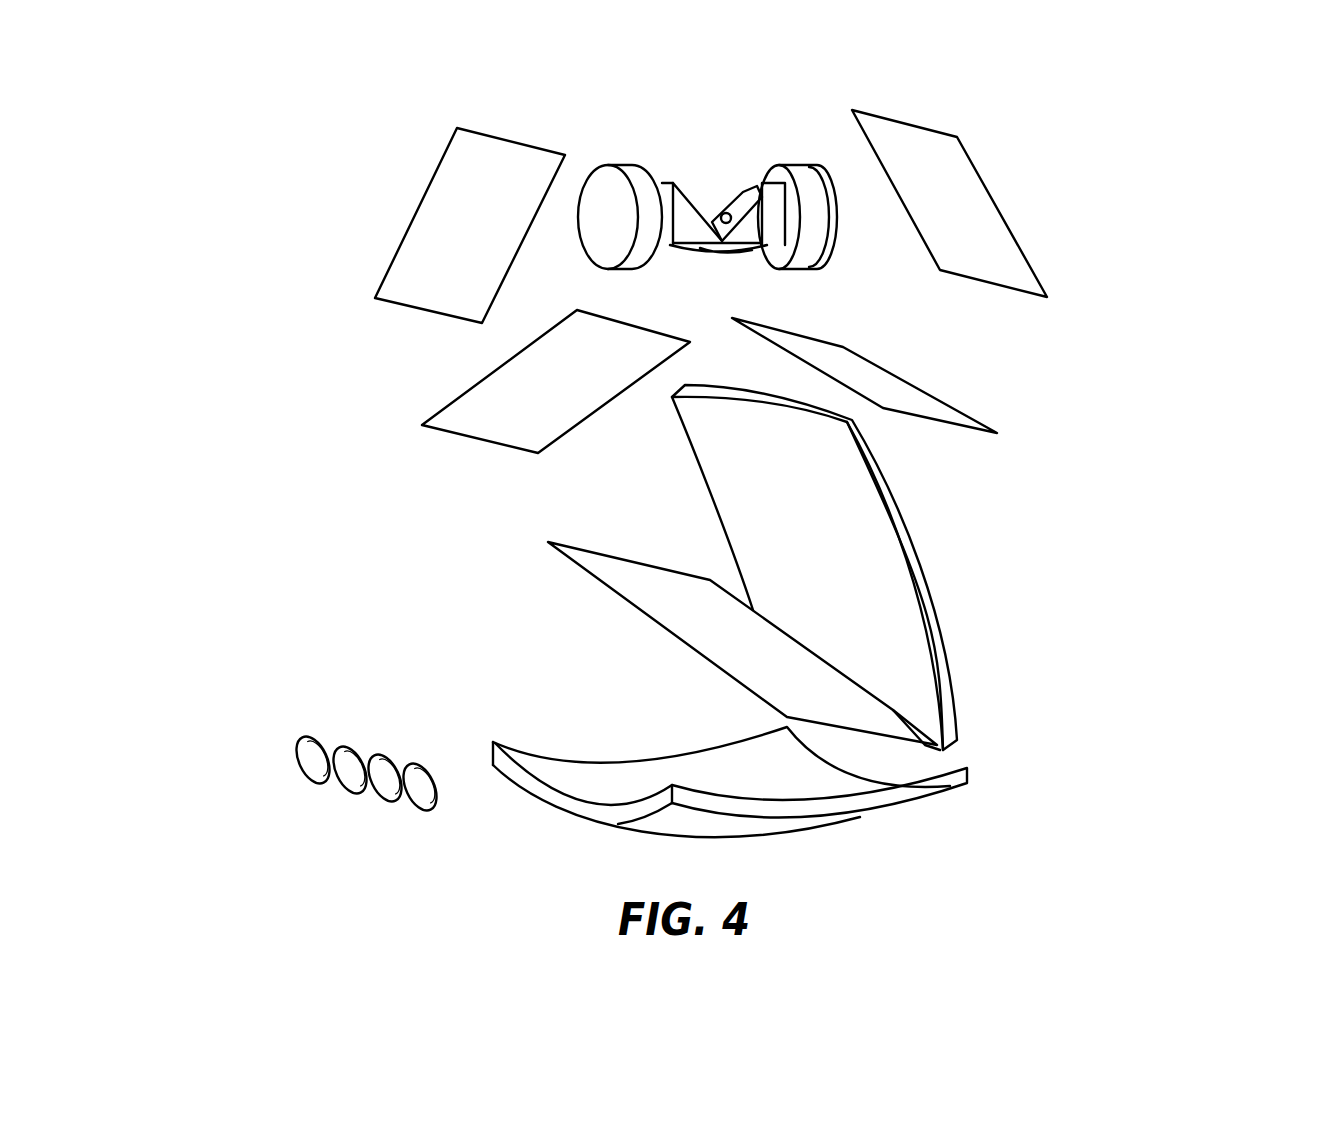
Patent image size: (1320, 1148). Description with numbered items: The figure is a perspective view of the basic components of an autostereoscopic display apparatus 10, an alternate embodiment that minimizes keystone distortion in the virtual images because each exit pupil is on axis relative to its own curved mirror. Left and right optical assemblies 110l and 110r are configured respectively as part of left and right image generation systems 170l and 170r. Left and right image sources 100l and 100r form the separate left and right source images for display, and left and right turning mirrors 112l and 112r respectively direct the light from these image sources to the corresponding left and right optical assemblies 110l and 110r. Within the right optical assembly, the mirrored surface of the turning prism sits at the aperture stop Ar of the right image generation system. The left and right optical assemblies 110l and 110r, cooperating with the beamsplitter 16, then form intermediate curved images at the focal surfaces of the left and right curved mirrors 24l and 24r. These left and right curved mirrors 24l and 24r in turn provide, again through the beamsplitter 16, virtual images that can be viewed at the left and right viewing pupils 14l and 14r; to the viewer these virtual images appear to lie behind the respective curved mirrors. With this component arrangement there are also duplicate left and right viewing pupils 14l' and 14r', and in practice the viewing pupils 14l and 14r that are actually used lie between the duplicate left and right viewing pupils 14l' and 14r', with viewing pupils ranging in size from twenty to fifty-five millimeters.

The autostereoscopic display apparatus 10 is at (1162, 698).
The left image generation system 170l is at (270, 358).
The right image generation system 170r is at (1158, 168).
The left turning mirror 112l is at (387, 268).
The right turning mirror 112r is at (1035, 265).
The left optical assembly 110l is at (635, 163).
The right optical assembly 110r is at (790, 160).
The right pivot axis Ar is at (723, 213).
The left image source 100l is at (422, 425).
The right image source 100r is at (937, 398).
The left curved mirror 24l is at (943, 618).
The right curved mirror 24r is at (893, 817).
The beamsplitter 16 is at (700, 657).
The duplicate right viewing pupil 14r' is at (264, 769).
The left viewing pupil 14l is at (309, 804).
The right viewing pupil 14r is at (354, 830).
The duplicate left viewing pupil 14l' is at (420, 835).